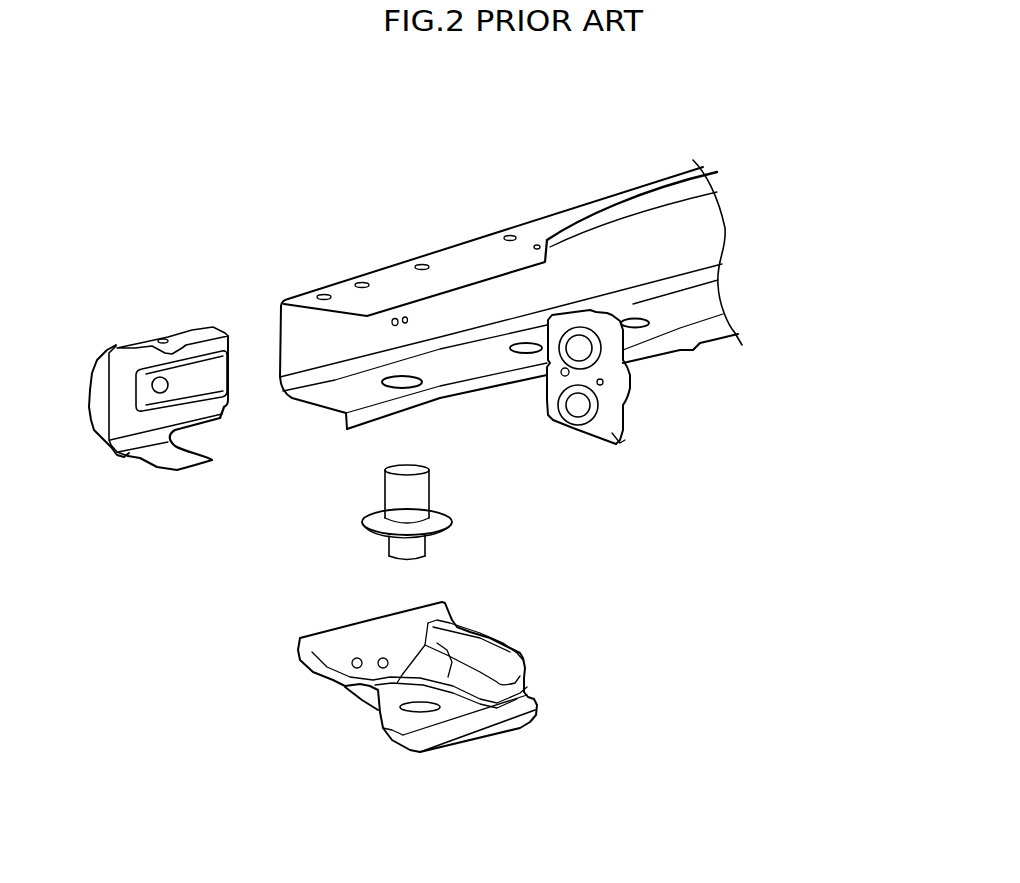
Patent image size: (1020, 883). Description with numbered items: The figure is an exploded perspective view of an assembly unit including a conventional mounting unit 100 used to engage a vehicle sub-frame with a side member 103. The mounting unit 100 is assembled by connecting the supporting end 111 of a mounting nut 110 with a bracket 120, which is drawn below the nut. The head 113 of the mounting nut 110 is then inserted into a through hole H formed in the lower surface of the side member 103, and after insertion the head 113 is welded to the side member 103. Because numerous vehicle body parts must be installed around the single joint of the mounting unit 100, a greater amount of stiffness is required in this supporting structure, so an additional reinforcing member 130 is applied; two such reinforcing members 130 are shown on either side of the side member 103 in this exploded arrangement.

The mounting unit 100 is at (578, 522).
The side member 103 is at (403, 280).
The through hole H is at (416, 366).
The mounting nut 110 is at (433, 521).
The supporting end 111 is at (373, 533).
The head 113 is at (393, 493).
The bracket 120 is at (481, 661).
The reinforcing member 130 is at (187, 410).